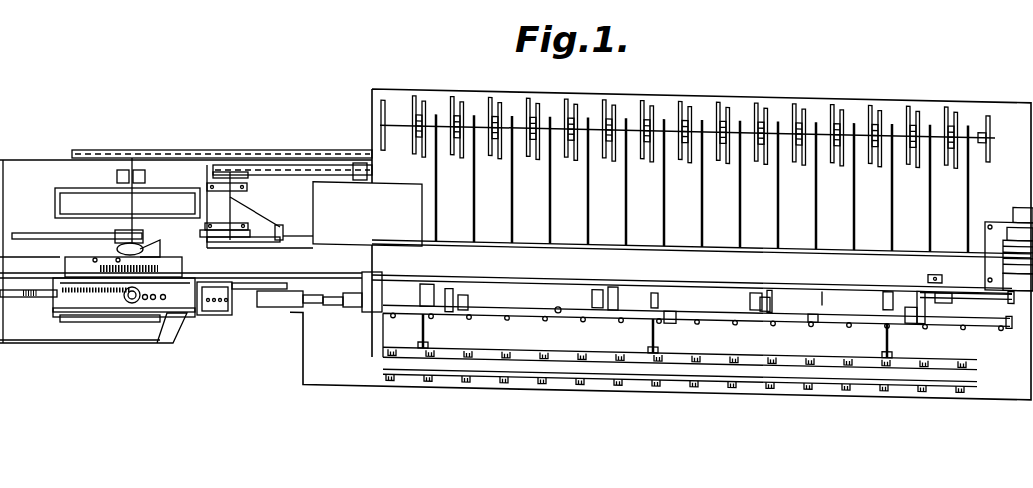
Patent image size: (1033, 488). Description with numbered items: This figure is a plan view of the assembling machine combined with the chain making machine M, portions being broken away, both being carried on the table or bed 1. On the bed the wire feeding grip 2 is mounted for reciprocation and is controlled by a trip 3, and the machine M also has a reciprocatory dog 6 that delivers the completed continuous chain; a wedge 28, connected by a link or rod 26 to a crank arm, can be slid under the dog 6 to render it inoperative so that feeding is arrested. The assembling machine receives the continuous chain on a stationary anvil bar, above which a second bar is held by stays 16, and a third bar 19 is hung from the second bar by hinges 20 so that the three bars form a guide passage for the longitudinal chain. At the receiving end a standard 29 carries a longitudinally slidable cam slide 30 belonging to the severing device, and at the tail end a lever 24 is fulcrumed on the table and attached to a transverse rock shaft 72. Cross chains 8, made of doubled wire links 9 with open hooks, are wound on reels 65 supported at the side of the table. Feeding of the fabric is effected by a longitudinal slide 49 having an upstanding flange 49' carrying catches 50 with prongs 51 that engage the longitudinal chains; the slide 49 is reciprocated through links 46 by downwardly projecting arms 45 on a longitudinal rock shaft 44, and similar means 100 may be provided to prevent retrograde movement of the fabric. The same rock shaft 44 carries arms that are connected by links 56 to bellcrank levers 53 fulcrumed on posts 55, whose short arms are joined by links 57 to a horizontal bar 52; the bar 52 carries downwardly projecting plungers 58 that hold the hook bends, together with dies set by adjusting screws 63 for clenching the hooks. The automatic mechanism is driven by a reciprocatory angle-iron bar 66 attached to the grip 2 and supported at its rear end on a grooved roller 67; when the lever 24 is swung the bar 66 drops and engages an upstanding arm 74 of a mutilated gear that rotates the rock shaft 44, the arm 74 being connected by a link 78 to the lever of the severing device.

The table or bed 1 is at (318, 378).
The wire feeding grip 2 is at (68, 298).
The chain making machine M is at (172, 310).
The link or rod 26 is at (227, 278).
The wedge 28 is at (257, 293).
The reciprocatory dog 6 is at (277, 300).
The slide 30 is at (323, 310).
The standard 29 is at (347, 312).
The trip 3 is at (374, 315).
The stays or members 16 is at (389, 289).
The reciprocatory longitudinal bar 66 is at (318, 278).
The reel 65 is at (715, 113).
The doubled wire links 9 is at (653, 285).
The third bar 19 is at (515, 312).
The hinges 20 is at (440, 318).
The links 46 is at (420, 318).
The longitudinal slide 49 is at (680, 359).
The upstanding flange 49' is at (680, 393).
The means for preventing retrograde movement 100 is at (557, 372).
The catches 50 is at (752, 387).
The prongs 51 is at (752, 387).
The downwardly projecting arms 45 is at (428, 288).
The links 56 is at (449, 288).
The longitudinal horizontal bar 52 is at (558, 300).
The standards or posts 55 is at (597, 286).
The links 57 is at (603, 315).
The bellcrank levers 53 is at (607, 278).
The longitudinal rock shaft 44 is at (770, 292).
The link 78 is at (822, 282).
The cross chains 8 is at (948, 325).
The upstanding arm 74 is at (941, 304).
The transverse rock shaft 72 is at (1003, 290).
The grooved roller or wheel 67 is at (978, 283).
The plungers 58 is at (812, 318).
The adjusting screws 63 is at (664, 318).
The lever 24 is at (1012, 310).